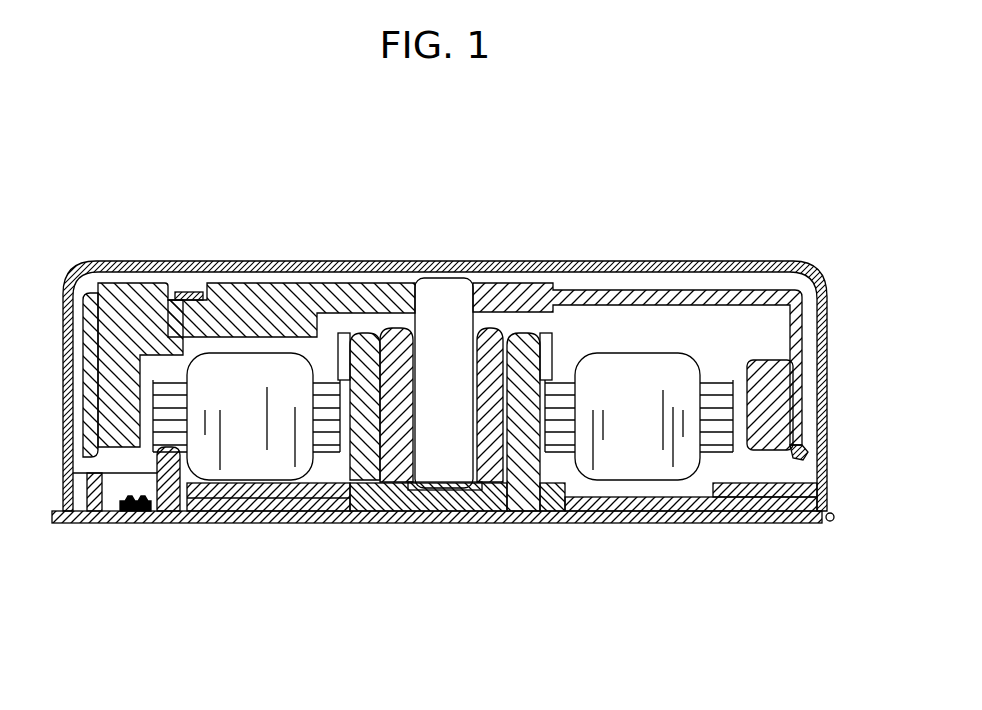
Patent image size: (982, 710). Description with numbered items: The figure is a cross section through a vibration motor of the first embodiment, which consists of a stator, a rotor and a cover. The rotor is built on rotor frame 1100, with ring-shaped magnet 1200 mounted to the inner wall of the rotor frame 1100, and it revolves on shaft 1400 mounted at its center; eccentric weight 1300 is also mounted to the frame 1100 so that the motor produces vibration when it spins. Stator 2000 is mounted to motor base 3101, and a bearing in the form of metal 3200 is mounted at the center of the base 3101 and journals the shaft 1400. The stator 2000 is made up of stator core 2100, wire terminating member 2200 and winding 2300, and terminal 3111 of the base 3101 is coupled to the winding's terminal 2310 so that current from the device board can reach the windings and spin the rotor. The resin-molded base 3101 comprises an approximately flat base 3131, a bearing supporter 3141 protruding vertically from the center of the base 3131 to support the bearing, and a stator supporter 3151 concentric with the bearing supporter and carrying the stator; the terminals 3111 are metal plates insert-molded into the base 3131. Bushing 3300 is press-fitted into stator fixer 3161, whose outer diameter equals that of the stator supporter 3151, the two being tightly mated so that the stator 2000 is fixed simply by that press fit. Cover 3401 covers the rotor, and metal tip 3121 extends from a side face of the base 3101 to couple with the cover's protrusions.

The rotor frame 1100 is at (523, 302).
The ring-shaped magnet 1200 is at (763, 360).
The eccentric weight 1300 is at (135, 300).
The shaft 1400 is at (448, 302).
The stator 2000 is at (643, 365).
The stator core 2100 is at (325, 440).
The wire terminating member 2200 is at (177, 523).
The winding 2300 is at (262, 465).
The winding's terminal 2310 is at (147, 528).
The motor base 3101 is at (437, 440).
The terminal 3111 is at (103, 520).
The metal tip 3121 is at (833, 522).
The base 3131 is at (458, 510).
The bearing supporter 3141 is at (520, 452).
The stator supporter 3151 is at (590, 485).
The stator fixer 3161 is at (681, 483).
The metal 3200 is at (398, 326).
The bushing 3300 is at (335, 328).
The cover 3401 is at (223, 266).